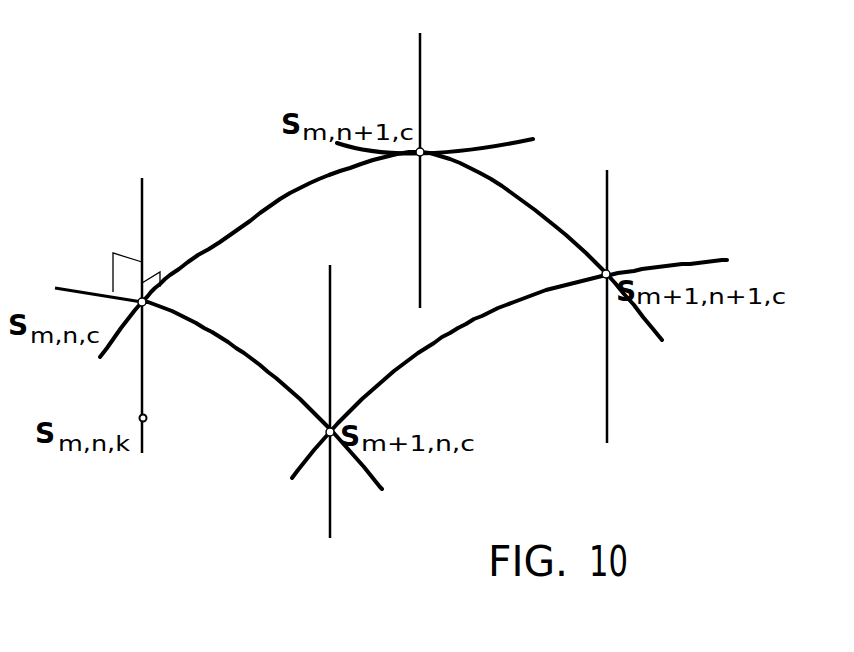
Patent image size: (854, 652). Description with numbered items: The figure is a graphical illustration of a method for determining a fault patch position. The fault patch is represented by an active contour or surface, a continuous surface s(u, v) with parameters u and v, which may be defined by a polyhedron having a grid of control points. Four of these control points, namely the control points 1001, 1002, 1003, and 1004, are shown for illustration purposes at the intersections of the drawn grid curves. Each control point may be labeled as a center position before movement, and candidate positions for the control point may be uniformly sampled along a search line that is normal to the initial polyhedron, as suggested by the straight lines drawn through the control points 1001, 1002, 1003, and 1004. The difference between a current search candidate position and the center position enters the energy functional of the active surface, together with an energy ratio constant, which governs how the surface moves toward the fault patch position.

The control point 1001 is at (83, 215).
The control point 1002 is at (323, 435).
The control point 1003 is at (425, 140).
The control point 1004 is at (607, 265).